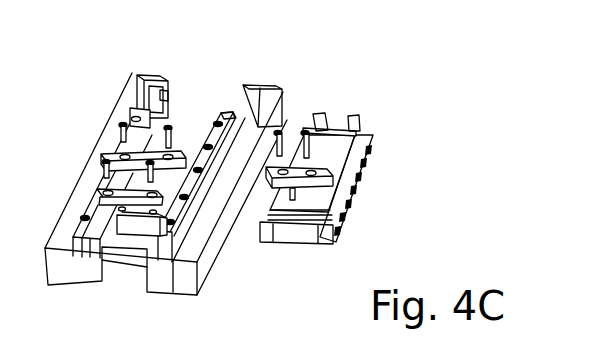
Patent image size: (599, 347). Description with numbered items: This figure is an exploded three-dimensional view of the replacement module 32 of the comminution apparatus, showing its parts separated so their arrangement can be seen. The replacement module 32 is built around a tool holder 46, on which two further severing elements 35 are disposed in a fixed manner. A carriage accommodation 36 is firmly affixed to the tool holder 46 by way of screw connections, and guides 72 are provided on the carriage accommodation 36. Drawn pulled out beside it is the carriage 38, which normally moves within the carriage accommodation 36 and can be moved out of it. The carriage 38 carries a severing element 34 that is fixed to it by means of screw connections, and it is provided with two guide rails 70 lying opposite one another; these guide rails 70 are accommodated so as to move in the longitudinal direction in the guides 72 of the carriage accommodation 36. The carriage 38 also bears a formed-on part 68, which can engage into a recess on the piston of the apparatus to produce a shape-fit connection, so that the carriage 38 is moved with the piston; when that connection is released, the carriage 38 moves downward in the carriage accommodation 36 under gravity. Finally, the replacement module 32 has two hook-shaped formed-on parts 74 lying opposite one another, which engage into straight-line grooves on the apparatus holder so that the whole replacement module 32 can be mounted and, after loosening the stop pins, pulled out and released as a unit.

The replacement module 32 is at (237, 147).
The severing element 34 is at (267, 168).
The severing elements 35 is at (177, 153).
The carriage accommodation 36 is at (215, 110).
The carriage 38 is at (368, 127).
The tool holder 46 is at (279, 110).
The formed-on part 68 is at (327, 127).
The guide rails 70 is at (370, 177).
The guides 72 is at (166, 98).
The hook-shaped formed-on parts 74 is at (147, 77).